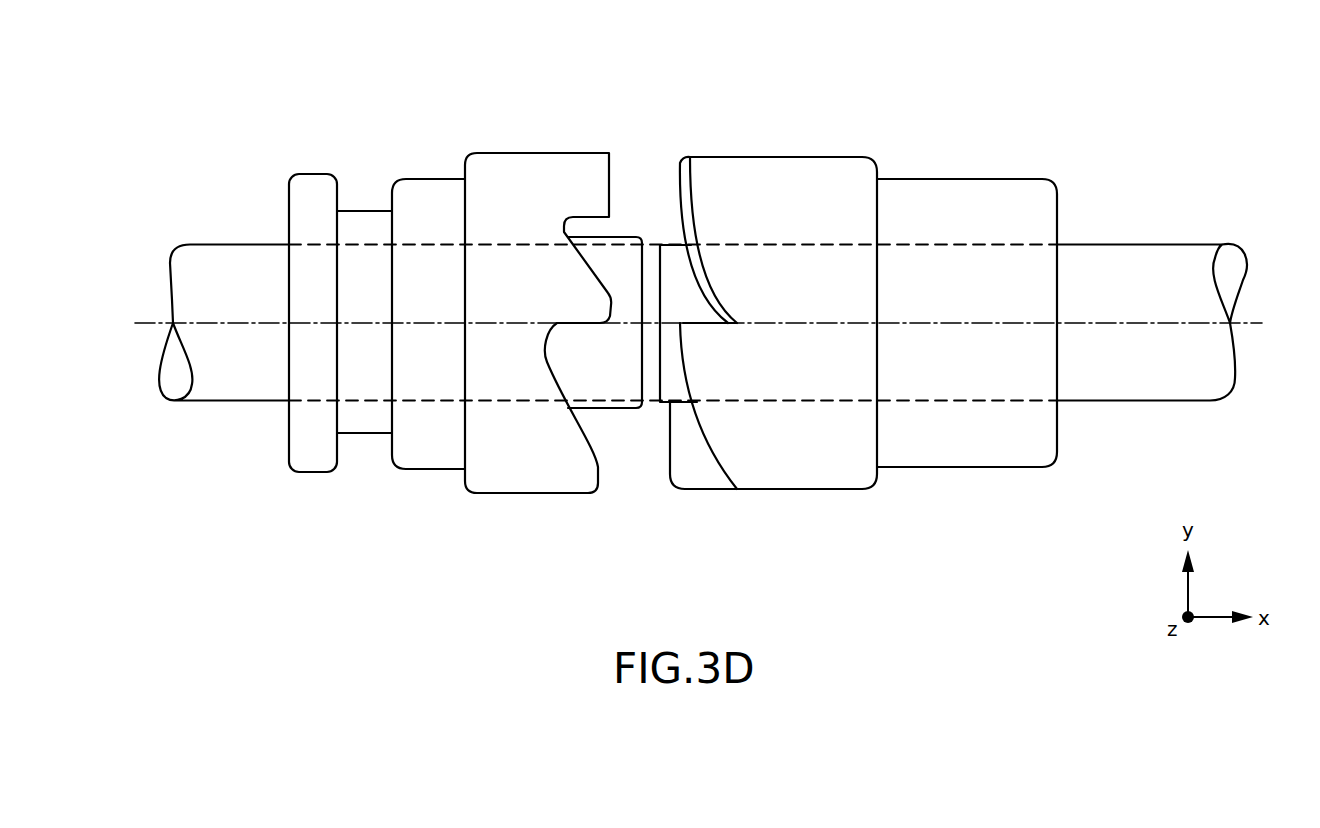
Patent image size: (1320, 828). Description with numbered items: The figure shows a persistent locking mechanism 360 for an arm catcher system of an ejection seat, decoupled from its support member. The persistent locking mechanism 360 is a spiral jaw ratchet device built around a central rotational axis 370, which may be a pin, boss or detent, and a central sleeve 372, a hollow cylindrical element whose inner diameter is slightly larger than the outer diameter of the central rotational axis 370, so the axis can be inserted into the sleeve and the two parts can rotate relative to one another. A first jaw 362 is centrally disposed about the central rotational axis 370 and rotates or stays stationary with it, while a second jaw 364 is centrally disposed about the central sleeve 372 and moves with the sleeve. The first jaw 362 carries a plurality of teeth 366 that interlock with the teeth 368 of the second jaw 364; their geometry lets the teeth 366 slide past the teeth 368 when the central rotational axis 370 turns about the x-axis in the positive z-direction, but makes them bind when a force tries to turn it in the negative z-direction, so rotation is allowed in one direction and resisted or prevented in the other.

The persistent locking mechanism 360 is at (266, 144).
The first jaw 362 is at (837, 175).
The second jaw 364 is at (528, 175).
The teeth 366 is at (690, 190).
The teeth 368 is at (590, 281).
The central rotational axis 370 is at (1155, 262).
The central sleeve 372 is at (623, 395).